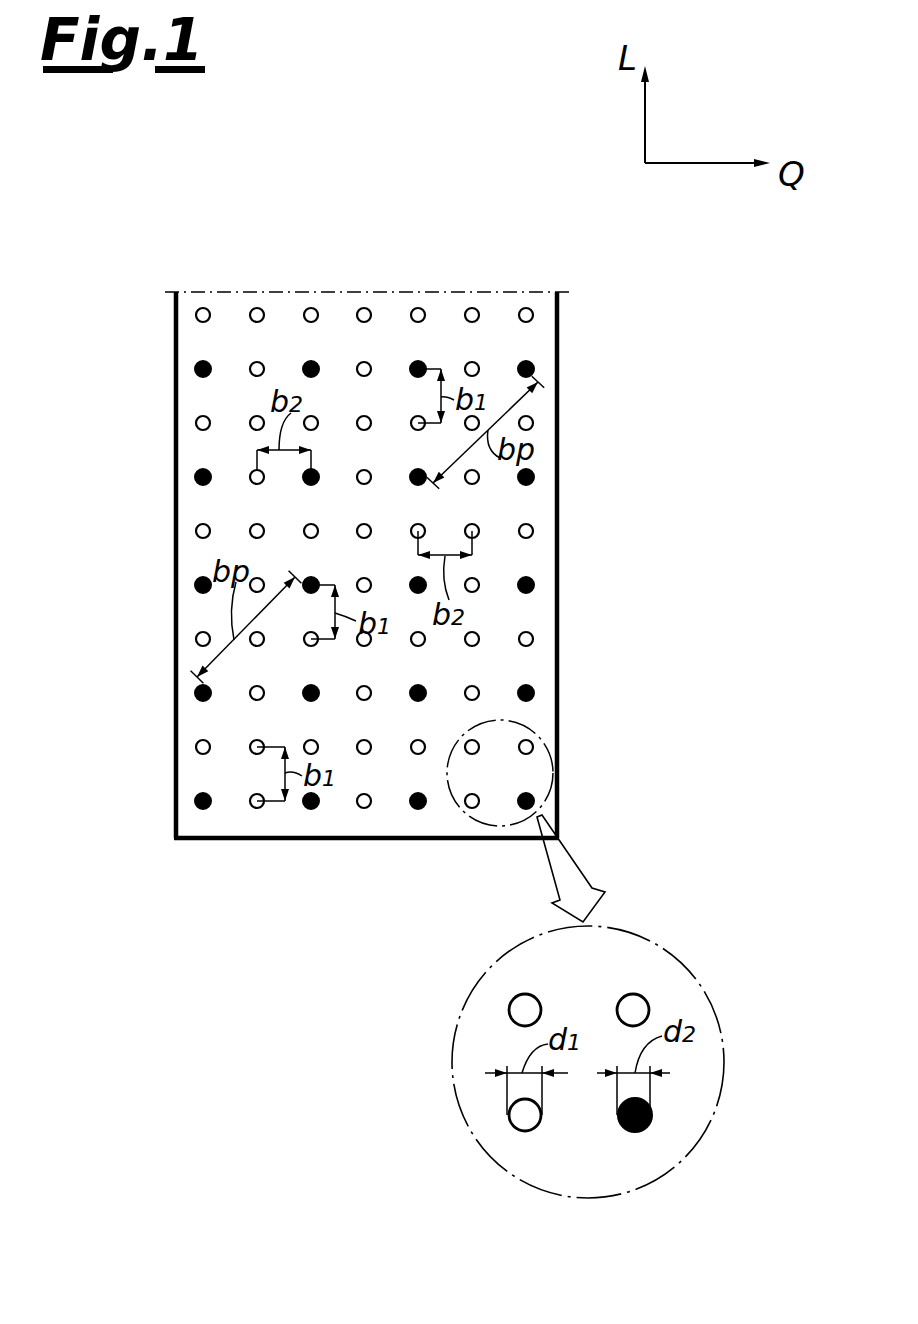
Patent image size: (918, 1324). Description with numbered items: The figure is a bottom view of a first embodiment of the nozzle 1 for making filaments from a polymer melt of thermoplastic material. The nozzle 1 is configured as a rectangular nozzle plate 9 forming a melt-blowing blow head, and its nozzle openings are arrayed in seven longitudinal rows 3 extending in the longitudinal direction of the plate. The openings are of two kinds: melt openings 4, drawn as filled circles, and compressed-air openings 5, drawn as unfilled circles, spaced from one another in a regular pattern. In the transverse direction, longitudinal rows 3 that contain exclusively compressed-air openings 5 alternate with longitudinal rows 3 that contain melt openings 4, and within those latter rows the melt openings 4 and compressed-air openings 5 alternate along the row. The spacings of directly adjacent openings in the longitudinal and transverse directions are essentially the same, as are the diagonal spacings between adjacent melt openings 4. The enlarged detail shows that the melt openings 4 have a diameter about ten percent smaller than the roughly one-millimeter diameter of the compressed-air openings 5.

The nozzle 1 is at (652, 344).
The longitudinal row 3 is at (412, 822).
The melt opening 4 is at (533, 699).
The compressed-air opening 5 is at (532, 538).
The nozzle plate 9 is at (566, 500).